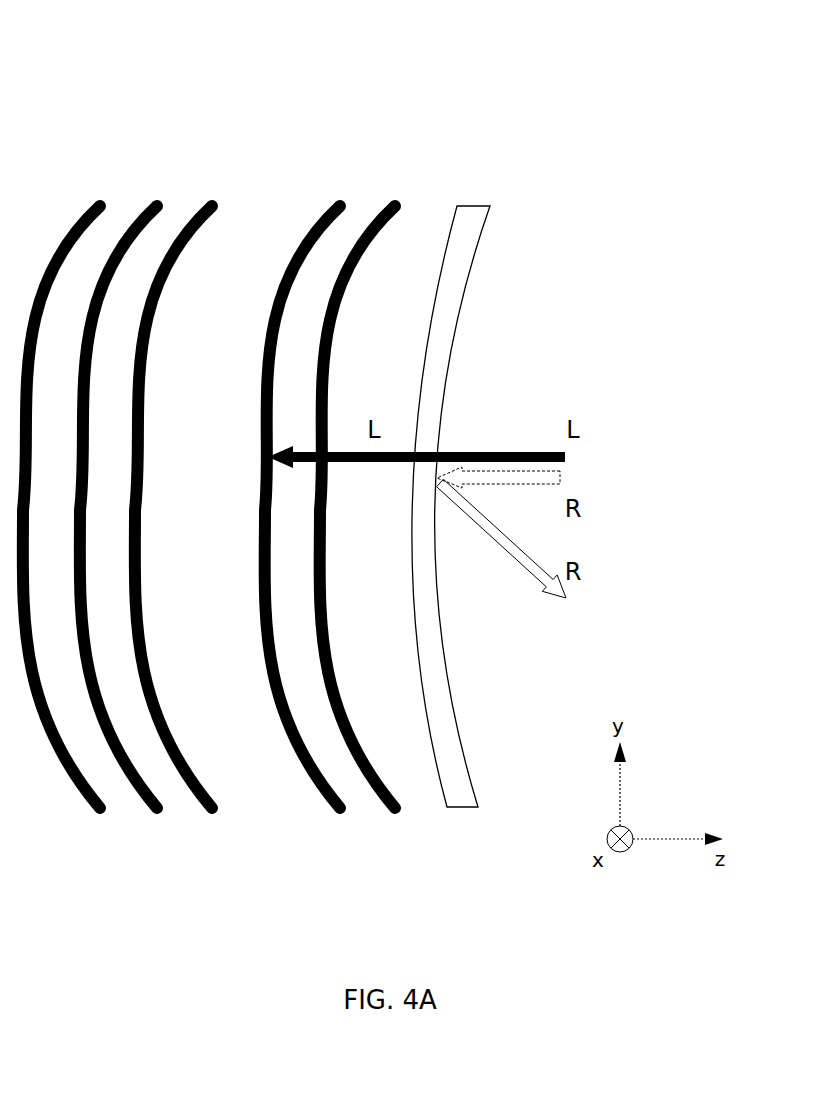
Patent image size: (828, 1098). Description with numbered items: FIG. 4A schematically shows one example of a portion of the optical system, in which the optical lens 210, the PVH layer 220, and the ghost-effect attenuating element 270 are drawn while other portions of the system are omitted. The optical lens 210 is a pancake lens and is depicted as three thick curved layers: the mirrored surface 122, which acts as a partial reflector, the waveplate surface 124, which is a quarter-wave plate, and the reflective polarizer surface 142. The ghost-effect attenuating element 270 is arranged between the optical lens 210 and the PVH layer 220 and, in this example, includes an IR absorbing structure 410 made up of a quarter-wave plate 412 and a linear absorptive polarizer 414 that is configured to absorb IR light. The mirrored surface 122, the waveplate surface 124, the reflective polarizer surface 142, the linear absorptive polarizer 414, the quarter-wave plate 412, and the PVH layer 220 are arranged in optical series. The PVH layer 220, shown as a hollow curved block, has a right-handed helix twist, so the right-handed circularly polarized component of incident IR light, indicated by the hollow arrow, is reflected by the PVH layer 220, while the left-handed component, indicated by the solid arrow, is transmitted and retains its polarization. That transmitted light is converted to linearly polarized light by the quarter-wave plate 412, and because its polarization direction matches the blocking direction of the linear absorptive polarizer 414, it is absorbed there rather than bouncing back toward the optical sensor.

The optical lens 210 is at (80, 76).
The mirrored surface 122 is at (100, 205).
The waveplate surface 124 is at (157, 205).
The reflective polarizer surface 142 is at (212, 205).
The IR absorbing structure 410 is at (322, 76).
The ghost-effect attenuating element 270 is at (347, 411).
The linear absorptive polarizer 414 is at (340, 205).
The quarter-wave plate 412 is at (395, 205).
The PVH layer 220 is at (488, 205).